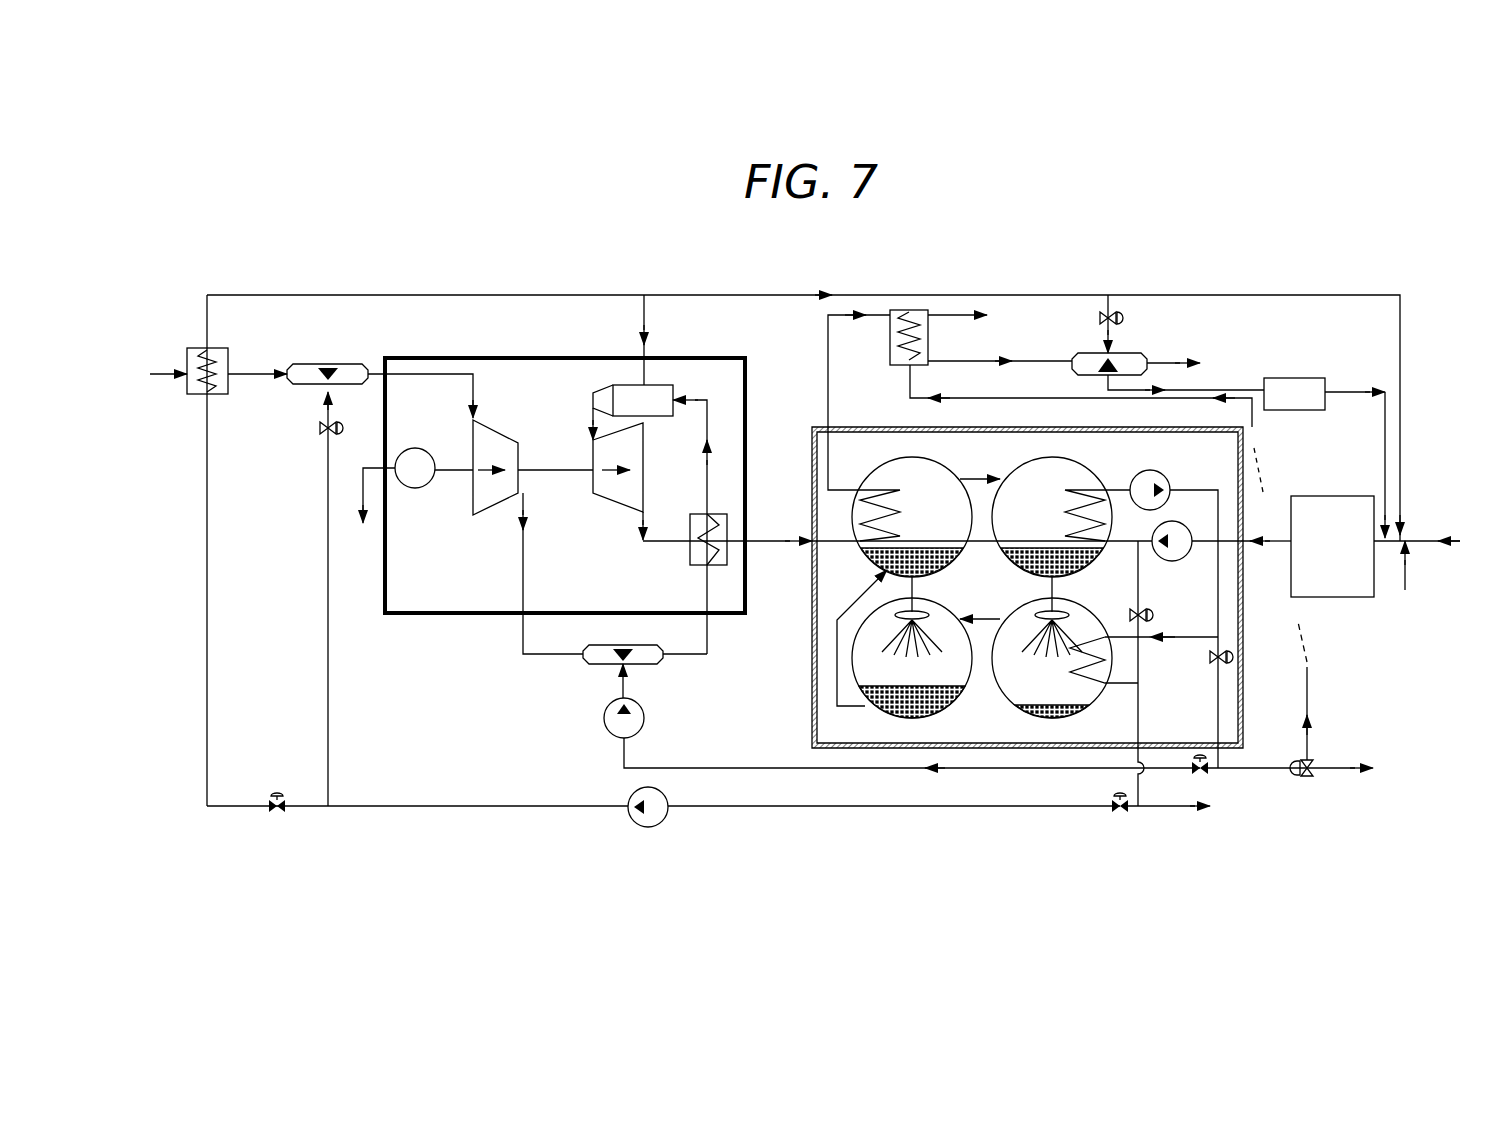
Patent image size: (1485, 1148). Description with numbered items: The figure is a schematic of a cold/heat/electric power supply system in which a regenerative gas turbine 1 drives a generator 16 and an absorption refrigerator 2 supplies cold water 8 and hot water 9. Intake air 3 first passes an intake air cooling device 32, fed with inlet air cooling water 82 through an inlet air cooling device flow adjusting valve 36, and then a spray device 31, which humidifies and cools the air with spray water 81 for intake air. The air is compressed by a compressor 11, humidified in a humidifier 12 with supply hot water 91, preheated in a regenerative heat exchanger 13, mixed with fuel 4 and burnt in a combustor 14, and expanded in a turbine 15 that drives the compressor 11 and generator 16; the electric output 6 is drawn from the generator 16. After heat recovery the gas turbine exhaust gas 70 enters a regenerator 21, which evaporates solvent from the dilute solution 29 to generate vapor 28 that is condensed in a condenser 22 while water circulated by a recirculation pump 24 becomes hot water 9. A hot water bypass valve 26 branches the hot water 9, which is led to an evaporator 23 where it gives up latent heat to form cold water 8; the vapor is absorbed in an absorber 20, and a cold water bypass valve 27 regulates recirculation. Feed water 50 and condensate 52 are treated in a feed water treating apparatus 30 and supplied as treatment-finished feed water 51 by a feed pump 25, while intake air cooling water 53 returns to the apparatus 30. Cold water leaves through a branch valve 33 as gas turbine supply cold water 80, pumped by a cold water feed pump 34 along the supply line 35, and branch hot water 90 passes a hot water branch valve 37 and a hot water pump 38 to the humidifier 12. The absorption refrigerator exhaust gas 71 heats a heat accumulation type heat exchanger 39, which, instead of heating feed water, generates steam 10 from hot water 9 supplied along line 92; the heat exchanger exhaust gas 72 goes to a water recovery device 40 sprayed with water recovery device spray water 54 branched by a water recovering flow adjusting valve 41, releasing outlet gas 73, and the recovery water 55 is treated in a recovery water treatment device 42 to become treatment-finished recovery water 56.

The regenerative gas turbine 1 is at (718, 356).
The absorption refrigerator 2 is at (866, 426).
The air 3 is at (169, 366).
The fuel 4 is at (640, 324).
The electric power output 6 is at (362, 500).
The cold water 8 is at (1190, 816).
The hot water 9 is at (1268, 774).
The steam 10 is at (970, 318).
The compressor 11 is at (500, 426).
The humidifier 12 is at (626, 646).
The regenerative heat exchanger 13 is at (696, 514).
The combustor 14 is at (594, 390).
The turbine 15 is at (624, 512).
The generator 16 is at (420, 448).
The absorber 20 is at (944, 610).
The regenerator 21 is at (948, 478).
The condenser 22 is at (1096, 484).
The evaporator 23 is at (1084, 609).
The recirculation pump 24 is at (1162, 479).
The feed pump 25 is at (1184, 526).
The hot water bypass valve 26 is at (1208, 664).
The cold water bypass valve 27 is at (1128, 616).
The vapor 28 is at (984, 476).
The dilute solution 29 is at (860, 588).
The feed water treating apparatus 30 is at (1326, 496).
The spray device 31 is at (326, 362).
The intake air cooling device 32 is at (196, 346).
The branch valve 33 is at (1120, 814).
The cold water feed pump 34 is at (650, 828).
The water supply line 35 is at (328, 518).
The inlet air cooling device flow adjusting valve 36 is at (277, 812).
The hot water branch valve 37 is at (1198, 778).
The hot water pump 38 is at (604, 730).
The heat accumulation type heat exchanger 39 is at (890, 346).
The water recovery device 40 is at (1082, 354).
The water recovering flow adjusting valve 41 is at (1100, 318).
The recovery water treatment device 42 is at (1290, 378).
The feed water 50 is at (1442, 536).
The treatment-finished feed water 51 is at (1274, 536).
The condensate 52 is at (1410, 588).
The intake air cooling water 53 is at (826, 290).
The water recovery device spray water 54 is at (1116, 340).
The recovery water 55 is at (1140, 390).
The treatment-finished recovery water 56 is at (1360, 388).
The gas turbine exhaust gas 70 is at (788, 536).
The absorption refrigerator exhaust gas 71 is at (828, 350).
The heat exchanger exhaust gas 72 is at (986, 358).
The exhaust outlet line 73 is at (1186, 358).
The gas turbine supply cold water 80 is at (777, 808).
The spray water for intake air 81 is at (320, 402).
The inlet air cooling water 82 is at (208, 404).
The branch hot water 90 is at (946, 770).
The supply hot water 91 is at (620, 684).
The water line 92 is at (950, 400).